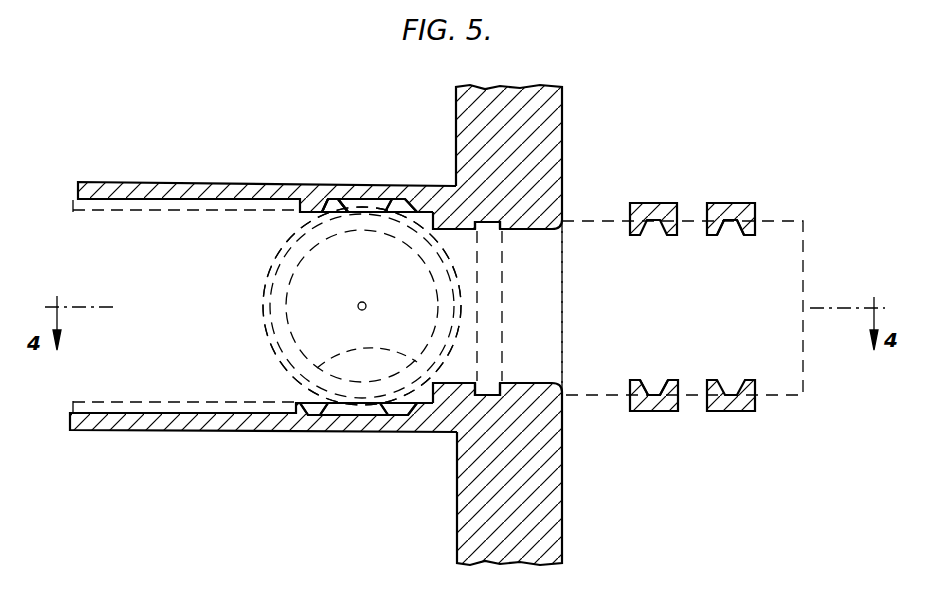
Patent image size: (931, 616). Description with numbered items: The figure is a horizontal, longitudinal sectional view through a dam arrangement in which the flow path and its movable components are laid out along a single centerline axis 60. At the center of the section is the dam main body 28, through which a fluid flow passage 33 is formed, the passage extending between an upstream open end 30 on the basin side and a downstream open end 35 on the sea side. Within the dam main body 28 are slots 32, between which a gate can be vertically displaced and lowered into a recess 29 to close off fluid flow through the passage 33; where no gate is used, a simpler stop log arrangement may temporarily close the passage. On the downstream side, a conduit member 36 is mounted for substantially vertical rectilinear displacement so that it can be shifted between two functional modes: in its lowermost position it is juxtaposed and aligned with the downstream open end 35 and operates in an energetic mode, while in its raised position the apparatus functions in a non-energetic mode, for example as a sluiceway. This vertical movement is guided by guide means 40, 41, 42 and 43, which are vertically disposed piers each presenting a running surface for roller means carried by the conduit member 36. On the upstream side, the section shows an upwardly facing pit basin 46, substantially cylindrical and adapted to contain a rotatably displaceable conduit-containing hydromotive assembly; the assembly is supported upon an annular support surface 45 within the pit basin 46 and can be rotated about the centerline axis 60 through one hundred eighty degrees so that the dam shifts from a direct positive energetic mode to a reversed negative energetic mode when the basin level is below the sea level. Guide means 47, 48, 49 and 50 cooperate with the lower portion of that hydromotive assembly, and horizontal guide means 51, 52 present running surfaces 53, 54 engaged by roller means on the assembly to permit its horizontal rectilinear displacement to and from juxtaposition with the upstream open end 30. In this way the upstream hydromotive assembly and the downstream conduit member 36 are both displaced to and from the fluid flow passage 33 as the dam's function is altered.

The dam main body 28 is at (521, 163).
The recess 29 is at (498, 372).
The upstream open end 30 is at (443, 230).
The slots 32 is at (497, 226).
The fluid flow passage 33 is at (541, 291).
The downstream open end 35 is at (557, 298).
The conduit member 36 is at (701, 318).
The guide means 40 is at (660, 203).
The guide means 41 is at (731, 203).
The guide means 42 is at (651, 412).
The guide means 43 is at (738, 412).
The annular support surface 45 is at (367, 353).
The pit basin 46 is at (376, 286).
The guide means 47 is at (324, 201).
The guide means 48 is at (425, 203).
The guide means 49 is at (313, 418).
The guide means 50 is at (400, 420).
The horizontal guide means 51 is at (217, 183).
The horizontal guide means 52 is at (193, 432).
The running surface 53 is at (147, 208).
The running surface 54 is at (207, 405).
The centerline axis 60 is at (366, 310).